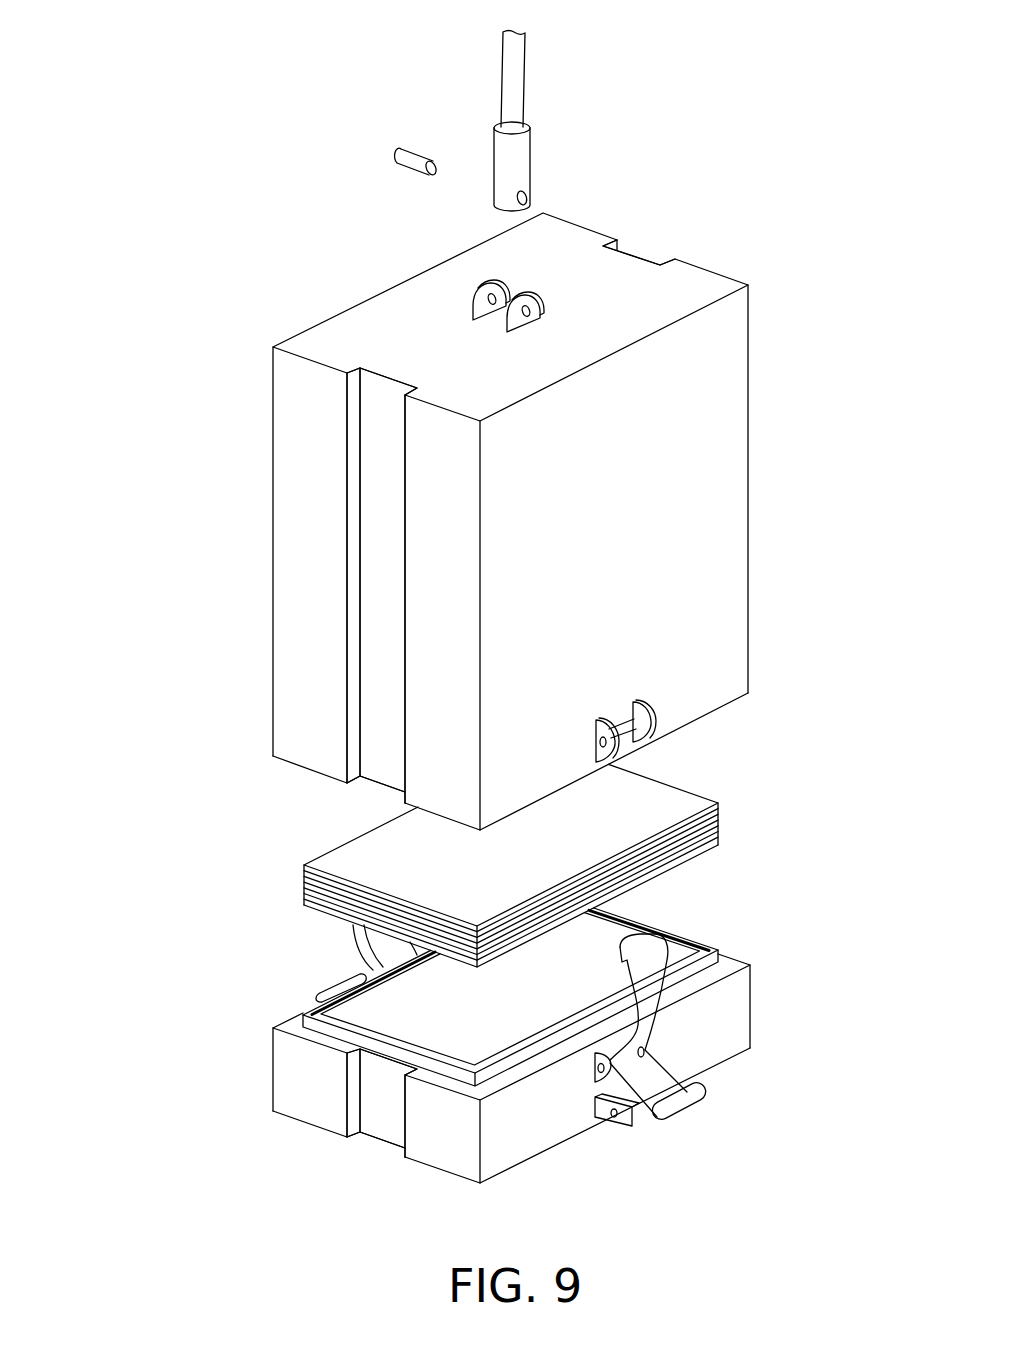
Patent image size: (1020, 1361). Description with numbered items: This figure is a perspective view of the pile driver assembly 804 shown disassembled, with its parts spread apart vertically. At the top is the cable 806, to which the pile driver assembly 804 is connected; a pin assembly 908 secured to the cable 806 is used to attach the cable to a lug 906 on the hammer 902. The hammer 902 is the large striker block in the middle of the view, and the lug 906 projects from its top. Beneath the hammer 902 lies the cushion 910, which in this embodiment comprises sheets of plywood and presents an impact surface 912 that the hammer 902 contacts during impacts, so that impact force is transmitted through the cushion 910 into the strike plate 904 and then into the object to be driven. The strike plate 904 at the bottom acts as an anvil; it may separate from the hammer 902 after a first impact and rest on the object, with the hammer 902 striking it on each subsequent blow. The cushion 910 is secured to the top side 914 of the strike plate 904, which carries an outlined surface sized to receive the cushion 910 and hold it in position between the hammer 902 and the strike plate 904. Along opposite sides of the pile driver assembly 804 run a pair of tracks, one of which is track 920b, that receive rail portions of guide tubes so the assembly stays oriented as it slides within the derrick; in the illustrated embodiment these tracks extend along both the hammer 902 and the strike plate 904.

The pile driver assembly 804 is at (122, 341).
The cable 806 is at (518, 75).
The pin assembly 908 is at (544, 176).
The hammer 902 is at (769, 450).
The track 920b is at (654, 248).
The lug 906 is at (490, 284).
The cushion 910 is at (764, 822).
The impact surface 912 is at (672, 807).
The top side of strike plate 914 is at (585, 975).
The strike plate 904 is at (764, 1012).